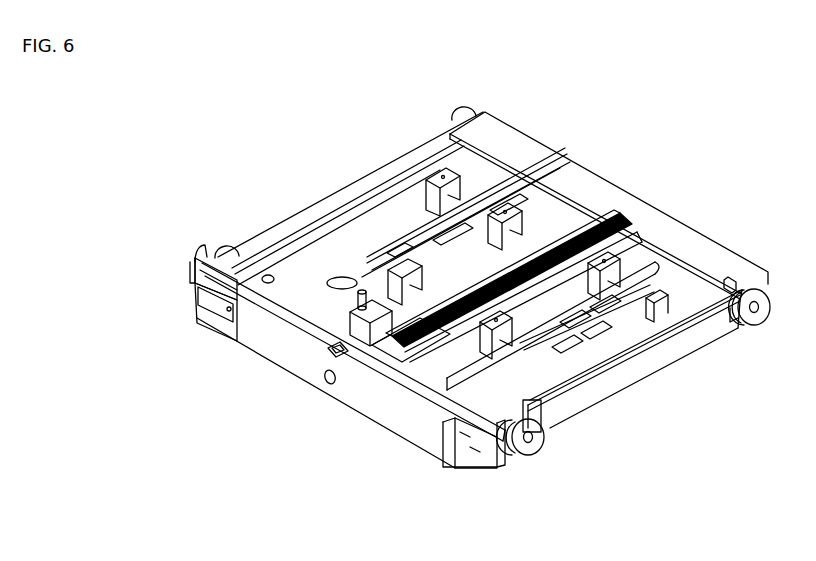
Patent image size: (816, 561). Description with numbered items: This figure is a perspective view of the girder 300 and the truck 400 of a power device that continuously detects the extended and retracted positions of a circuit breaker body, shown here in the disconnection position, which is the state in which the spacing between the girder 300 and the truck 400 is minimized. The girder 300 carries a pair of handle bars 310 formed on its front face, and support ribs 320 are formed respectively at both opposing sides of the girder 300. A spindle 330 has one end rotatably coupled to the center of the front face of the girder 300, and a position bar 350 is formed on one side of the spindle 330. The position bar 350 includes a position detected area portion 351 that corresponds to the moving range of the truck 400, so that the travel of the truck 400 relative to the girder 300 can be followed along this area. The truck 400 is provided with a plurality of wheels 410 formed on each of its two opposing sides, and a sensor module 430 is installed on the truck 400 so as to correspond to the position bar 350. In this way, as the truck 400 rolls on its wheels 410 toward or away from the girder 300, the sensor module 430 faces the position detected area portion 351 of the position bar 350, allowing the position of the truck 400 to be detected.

The girder 300 is at (267, 341).
The handle bars 310 is at (200, 296).
The support ribs 320 is at (195, 268).
The spindle 330 is at (430, 305).
The position bar 350 is at (535, 345).
The position detected area portion 351 is at (552, 318).
The truck 400 is at (660, 358).
The wheels 410 is at (532, 448).
The sensor module 430 is at (436, 385).